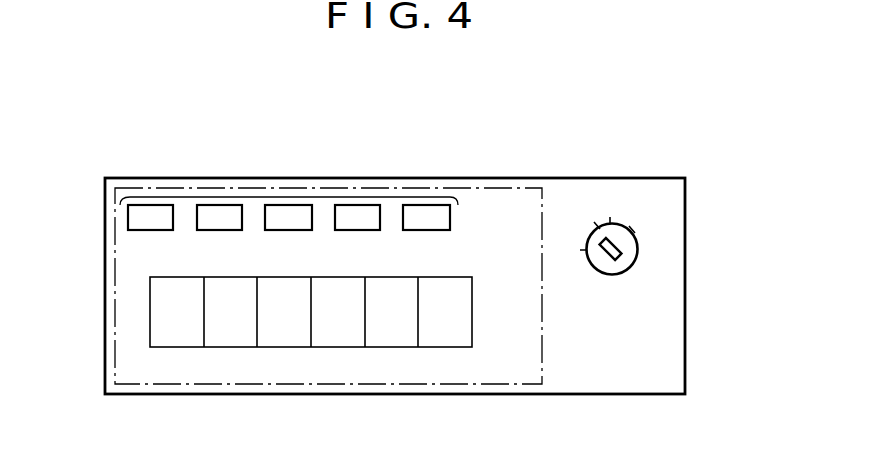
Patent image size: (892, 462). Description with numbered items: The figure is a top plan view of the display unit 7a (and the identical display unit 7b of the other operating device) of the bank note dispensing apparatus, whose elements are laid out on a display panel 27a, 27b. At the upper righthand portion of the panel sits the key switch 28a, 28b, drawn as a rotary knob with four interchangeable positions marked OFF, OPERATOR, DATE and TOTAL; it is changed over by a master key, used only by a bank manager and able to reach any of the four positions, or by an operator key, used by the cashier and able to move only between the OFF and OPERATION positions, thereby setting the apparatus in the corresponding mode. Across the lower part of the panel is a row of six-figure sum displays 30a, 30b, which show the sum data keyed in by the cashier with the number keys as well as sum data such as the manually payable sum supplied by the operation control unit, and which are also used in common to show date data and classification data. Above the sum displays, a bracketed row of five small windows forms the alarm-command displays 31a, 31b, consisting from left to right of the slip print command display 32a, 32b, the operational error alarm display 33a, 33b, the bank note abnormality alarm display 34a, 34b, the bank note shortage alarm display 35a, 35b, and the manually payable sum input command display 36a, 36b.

The display unit 7a is at (395, 311).
The display unit 7b is at (297, 370).
The display panel 27a is at (336, 317).
The display panel 27b is at (467, 373).
The key switch 28a is at (598, 258).
The key switch 28b is at (604, 272).
The sum displays 30a is at (309, 289).
The sum displays 30b is at (140, 276).
The alarm-command displays 31a is at (296, 162).
The alarm-command displays 31b is at (325, 197).
The slip print command display 32a is at (147, 186).
The slip print command display 32b is at (140, 208).
The operational error alarm display 33a is at (201, 234).
The operational error alarm display 33b is at (200, 218).
The bank note abnormality alarm display 34a is at (295, 186).
The bank note abnormality alarm display 34b is at (280, 209).
The bank note shortage alarm display 35a is at (429, 187).
The bank note shortage alarm display 35b is at (372, 208).
The manually payable sum input command display 36a is at (531, 186).
The manually payable sum input command display 36b is at (452, 210).